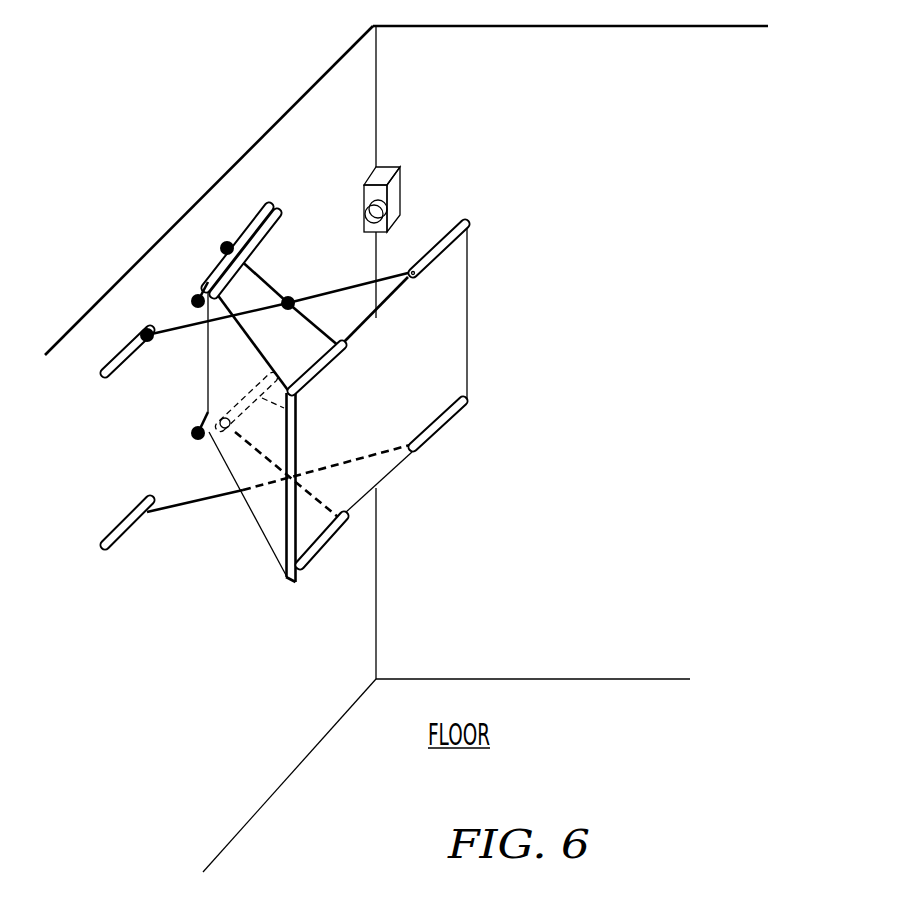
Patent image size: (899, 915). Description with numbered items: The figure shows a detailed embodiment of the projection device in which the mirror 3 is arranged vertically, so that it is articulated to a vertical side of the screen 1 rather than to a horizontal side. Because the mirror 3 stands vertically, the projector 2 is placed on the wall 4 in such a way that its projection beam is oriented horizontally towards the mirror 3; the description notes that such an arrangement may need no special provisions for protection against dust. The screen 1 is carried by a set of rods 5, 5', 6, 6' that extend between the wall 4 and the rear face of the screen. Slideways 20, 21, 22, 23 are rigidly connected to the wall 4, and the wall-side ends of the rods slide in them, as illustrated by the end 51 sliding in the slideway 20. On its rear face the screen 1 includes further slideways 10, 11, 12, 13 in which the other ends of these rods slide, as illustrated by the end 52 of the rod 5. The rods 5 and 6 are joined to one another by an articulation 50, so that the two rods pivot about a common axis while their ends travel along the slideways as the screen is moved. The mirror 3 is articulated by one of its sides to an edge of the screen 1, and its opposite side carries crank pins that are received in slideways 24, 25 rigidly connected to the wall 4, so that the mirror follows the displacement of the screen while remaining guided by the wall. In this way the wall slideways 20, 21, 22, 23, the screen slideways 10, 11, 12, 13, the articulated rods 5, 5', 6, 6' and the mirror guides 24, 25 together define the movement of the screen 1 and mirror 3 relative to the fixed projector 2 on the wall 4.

The rectangular frame (plane) 1 is at (443, 325).
The projector 2 is at (383, 176).
The mirror 3 is at (267, 533).
The wall 4 is at (634, 150).
The rod 5 is at (217, 346).
The rod 5' is at (195, 527).
The rod 6 is at (319, 290).
The rod 6' is at (325, 444).
The slideway 10 is at (460, 227).
The slideway 11 is at (443, 428).
The slideway 12 is at (344, 353).
The slideway 13 is at (312, 562).
The slideway 20 is at (104, 378).
The slideway 21 is at (103, 551).
The slideway 22 is at (268, 204).
The slideway 23 is at (297, 417).
The slideway 24 is at (198, 300).
The slideway 25 is at (192, 437).
The articulation 50 is at (294, 300).
The end 51 is at (141, 322).
The end 52 is at (411, 265).